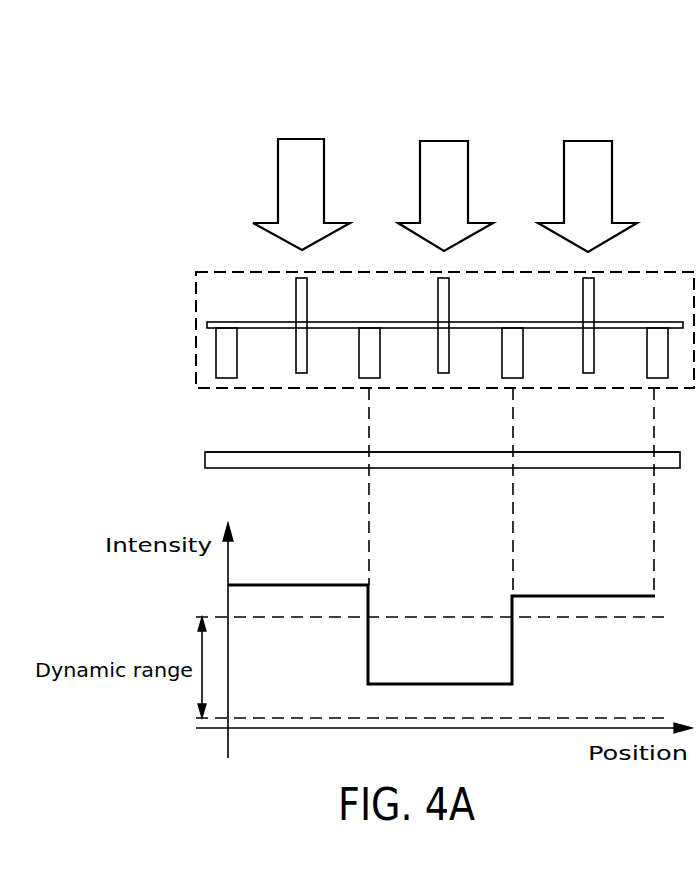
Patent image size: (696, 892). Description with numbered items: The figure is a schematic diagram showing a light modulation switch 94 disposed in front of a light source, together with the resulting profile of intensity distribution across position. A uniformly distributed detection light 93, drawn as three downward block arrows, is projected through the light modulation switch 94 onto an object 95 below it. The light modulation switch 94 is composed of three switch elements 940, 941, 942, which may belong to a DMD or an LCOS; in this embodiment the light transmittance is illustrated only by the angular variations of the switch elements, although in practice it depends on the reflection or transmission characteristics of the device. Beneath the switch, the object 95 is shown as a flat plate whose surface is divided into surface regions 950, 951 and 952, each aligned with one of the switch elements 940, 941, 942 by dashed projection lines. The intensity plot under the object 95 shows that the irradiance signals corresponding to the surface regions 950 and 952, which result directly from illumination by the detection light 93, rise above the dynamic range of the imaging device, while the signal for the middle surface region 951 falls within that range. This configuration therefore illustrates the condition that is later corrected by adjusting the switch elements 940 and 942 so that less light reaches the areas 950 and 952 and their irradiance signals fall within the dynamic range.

The detection light 93 is at (263, 126).
The light modulation switch 94 is at (422, 286).
The object 95 is at (411, 417).
The switch element 940 is at (296, 294).
The switch element 941 is at (438, 294).
The switch element 942 is at (583, 297).
The surface region 950 is at (303, 453).
The surface region 951 is at (457, 453).
The surface region 952 is at (580, 453).